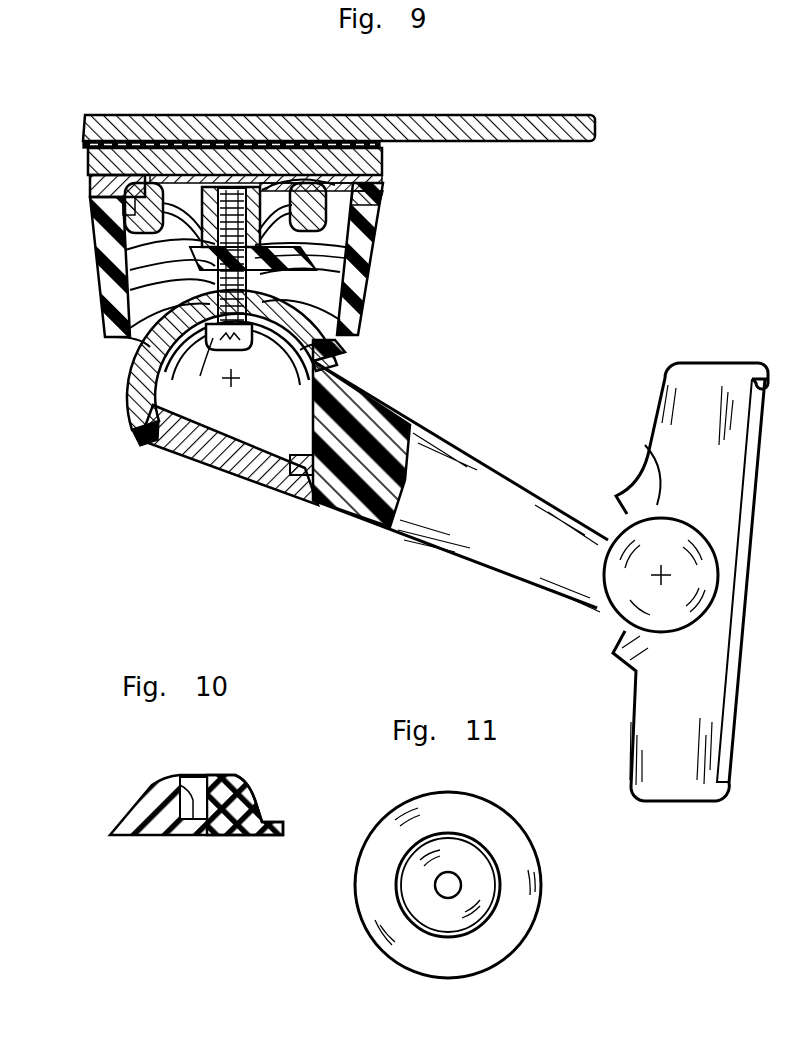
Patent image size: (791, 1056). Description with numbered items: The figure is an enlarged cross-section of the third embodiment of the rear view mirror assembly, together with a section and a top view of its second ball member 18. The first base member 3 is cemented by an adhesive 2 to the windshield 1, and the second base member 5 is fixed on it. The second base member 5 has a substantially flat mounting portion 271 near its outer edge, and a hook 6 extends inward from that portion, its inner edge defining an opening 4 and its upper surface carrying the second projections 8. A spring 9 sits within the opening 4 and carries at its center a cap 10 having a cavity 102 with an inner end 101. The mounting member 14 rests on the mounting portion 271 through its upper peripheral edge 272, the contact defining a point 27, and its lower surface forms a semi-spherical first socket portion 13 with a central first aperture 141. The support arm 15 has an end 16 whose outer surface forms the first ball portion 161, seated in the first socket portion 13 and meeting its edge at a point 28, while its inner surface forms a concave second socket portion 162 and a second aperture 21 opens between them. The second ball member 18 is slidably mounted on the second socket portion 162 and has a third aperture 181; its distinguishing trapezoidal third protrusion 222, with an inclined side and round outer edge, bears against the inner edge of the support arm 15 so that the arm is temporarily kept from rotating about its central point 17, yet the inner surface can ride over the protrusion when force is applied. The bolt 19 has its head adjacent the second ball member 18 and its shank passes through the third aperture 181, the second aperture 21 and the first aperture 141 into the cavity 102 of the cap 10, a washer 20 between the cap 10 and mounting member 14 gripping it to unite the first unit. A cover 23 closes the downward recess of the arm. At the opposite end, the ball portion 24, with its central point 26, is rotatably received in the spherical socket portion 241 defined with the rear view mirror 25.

In FIG. 9, the windshield 1 is at (575, 142).
In FIG. 9, the adhesive 2 is at (338, 138).
In FIG. 9, the first base member 3 is at (380, 161).
In FIG. 9, the opening 4 is at (125, 250).
In FIG. 9, the second base member 5 is at (383, 180).
In FIG. 9, the hook 6 is at (368, 244).
In FIG. 9, the second projections 8 is at (150, 205).
In FIG. 9, the spring 9 is at (370, 188).
In FIG. 9, the cap 10 is at (222, 188).
In FIG. 9, the inner end 101 is at (237, 188).
In FIG. 9, the cavity 102 is at (267, 192).
In FIG. 9, the first socket portion 13 is at (355, 271).
In FIG. 9, the mounting member 14 is at (360, 257).
In FIG. 9, the first aperture 141 is at (135, 288).
In FIG. 9, the support arm 15 is at (452, 460).
In FIG. 9, the end 16 is at (336, 344).
In FIG. 9, the first ball portion 161 is at (350, 319).
In FIG. 9, the second socket portion 162 is at (320, 356).
In FIG. 9, the central point 17 is at (231, 380).
In FIG. 9, the second ball member 18 is at (136, 426).
In FIG. 10, the second ball member 18 is at (166, 830).
In FIG. 11, the second ball member 18 is at (522, 930).
In FIG. 9, the third aperture 181 is at (213, 338).
In FIG. 10, the third aperture 181 is at (193, 800).
In FIG. 11, the third aperture 181 is at (445, 895).
In FIG. 9, the bolt 19 is at (252, 350).
In FIG. 9, the washer 20 is at (135, 268).
In FIG. 9, the second aperture 21 is at (132, 327).
In FIG. 9, the third protrusion 222 is at (260, 350).
In FIG. 10, the third protrusion 222 is at (166, 783).
In FIG. 11, the third protrusion 222 is at (480, 877).
In FIG. 9, the cover 23 is at (260, 478).
In FIG. 9, the ball portion 24 is at (628, 606).
In FIG. 9, the spherical socket portion 241 is at (647, 480).
In FIG. 9, the rear view mirror 25 is at (678, 790).
In FIG. 9, the central point 26 is at (630, 660).
In FIG. 9, the point 27 is at (96, 194).
In FIG. 9, the mounting portion 271 is at (370, 205).
In FIG. 9, the upper peripheral edge 272 is at (105, 213).
In FIG. 9, the point 28 is at (152, 340).